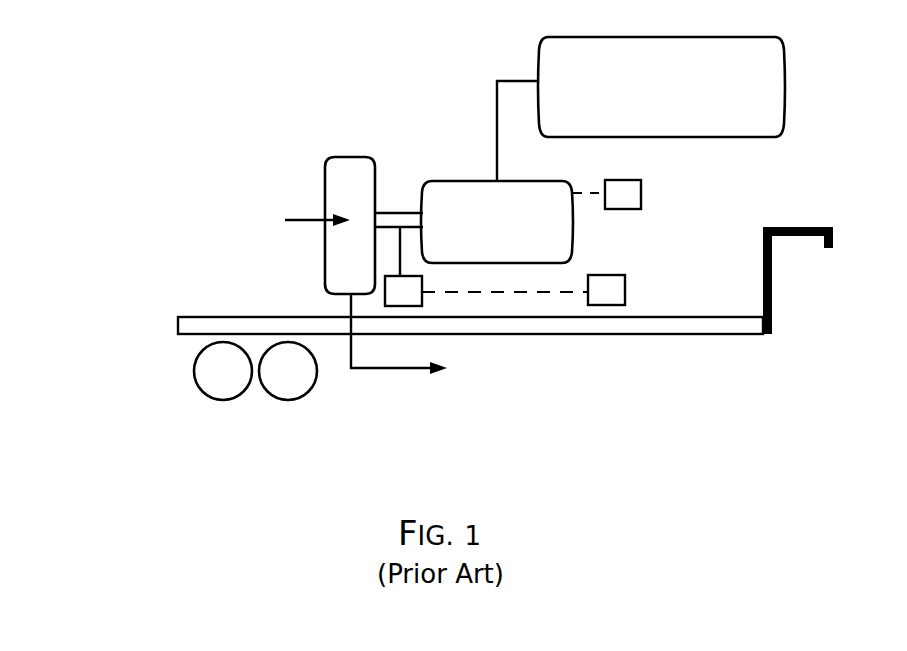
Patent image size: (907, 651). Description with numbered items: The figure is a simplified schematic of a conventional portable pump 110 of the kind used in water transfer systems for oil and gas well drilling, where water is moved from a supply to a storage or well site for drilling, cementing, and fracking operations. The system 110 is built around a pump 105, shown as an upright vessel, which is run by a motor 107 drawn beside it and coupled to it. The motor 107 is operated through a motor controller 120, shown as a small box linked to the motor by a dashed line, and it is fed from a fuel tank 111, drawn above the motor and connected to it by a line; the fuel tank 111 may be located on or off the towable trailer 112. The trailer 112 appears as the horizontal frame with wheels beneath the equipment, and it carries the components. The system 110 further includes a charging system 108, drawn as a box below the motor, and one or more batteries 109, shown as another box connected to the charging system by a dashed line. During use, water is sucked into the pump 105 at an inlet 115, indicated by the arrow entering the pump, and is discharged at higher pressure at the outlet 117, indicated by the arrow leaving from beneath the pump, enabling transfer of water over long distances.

The portable pump 110 is at (160, 108).
The pump 105 is at (337, 157).
The motor 107 is at (468, 181).
The fuel tank 111 is at (785, 58).
The charging system 108 is at (422, 306).
The batteries 109 is at (625, 287).
The motor controller 120 is at (641, 202).
The towable trailer 112 is at (628, 334).
The inlet 115 is at (302, 220).
The discharge 117 is at (382, 368).